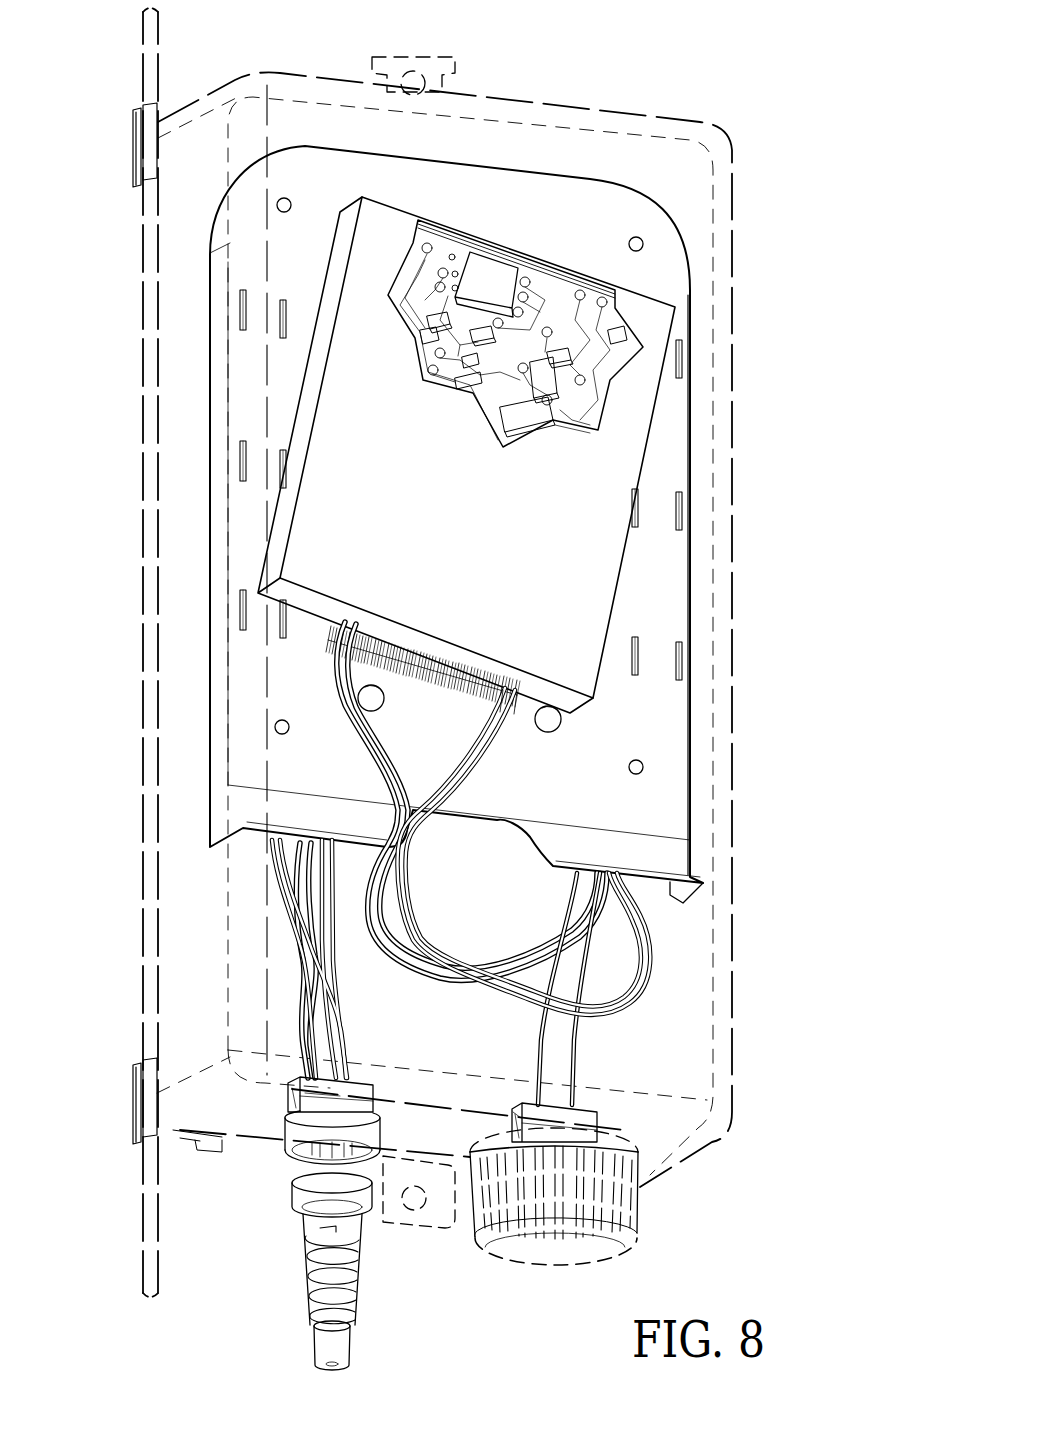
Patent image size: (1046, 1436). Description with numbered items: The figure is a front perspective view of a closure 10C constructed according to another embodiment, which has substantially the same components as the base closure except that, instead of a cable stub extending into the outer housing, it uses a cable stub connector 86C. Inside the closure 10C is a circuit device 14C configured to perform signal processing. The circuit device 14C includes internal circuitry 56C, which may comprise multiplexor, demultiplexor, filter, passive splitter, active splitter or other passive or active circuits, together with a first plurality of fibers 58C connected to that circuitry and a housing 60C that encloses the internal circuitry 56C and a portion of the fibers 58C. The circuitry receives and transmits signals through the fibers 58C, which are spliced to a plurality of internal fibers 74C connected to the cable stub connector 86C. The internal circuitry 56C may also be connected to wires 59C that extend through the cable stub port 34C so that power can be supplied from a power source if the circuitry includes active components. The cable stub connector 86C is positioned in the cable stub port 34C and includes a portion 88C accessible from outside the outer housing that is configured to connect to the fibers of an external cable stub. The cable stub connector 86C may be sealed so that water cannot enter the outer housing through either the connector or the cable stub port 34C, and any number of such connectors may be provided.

The closure 10C is at (797, 171).
The circuit device 14C is at (601, 258).
The internal circuitry 56C is at (433, 264).
The housing 60C is at (595, 485).
The first plurality of fibers 58C is at (523, 740).
The internal fibers 74C is at (284, 900).
The wires 59C is at (310, 1017).
The cable stub port 34C is at (288, 1108).
The portion 88C is at (220, 1138).
The cable stub connector 86C is at (296, 1175).